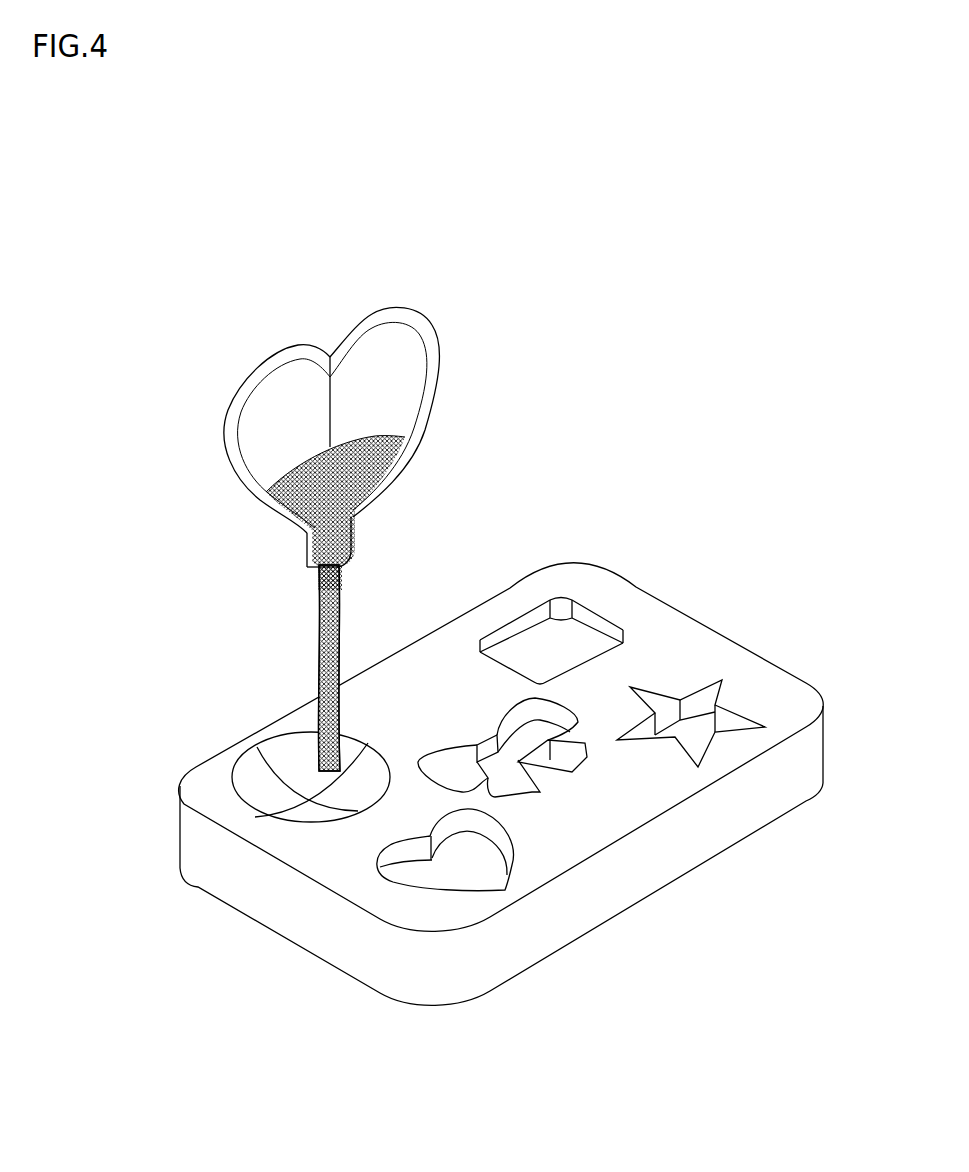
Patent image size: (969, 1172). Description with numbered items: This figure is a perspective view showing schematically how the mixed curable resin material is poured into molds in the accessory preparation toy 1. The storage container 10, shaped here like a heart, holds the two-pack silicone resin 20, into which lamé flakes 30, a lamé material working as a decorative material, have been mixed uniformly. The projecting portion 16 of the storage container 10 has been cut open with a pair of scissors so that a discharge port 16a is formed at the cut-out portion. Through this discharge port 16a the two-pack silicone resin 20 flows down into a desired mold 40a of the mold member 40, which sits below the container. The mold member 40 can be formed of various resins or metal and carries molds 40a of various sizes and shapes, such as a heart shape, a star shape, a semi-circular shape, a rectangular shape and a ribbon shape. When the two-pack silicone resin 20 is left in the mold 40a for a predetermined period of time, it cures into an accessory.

The accessory preparation toy 1 is at (695, 412).
The storage container 10 is at (336, 457).
The projecting portion 16 is at (264, 600).
The discharge port 16a is at (317, 565).
The two-pack silicone resin 20 is at (341, 587).
The lamé flakes 30 is at (333, 568).
The mold member 40 is at (482, 751).
The mold 40a is at (258, 797).